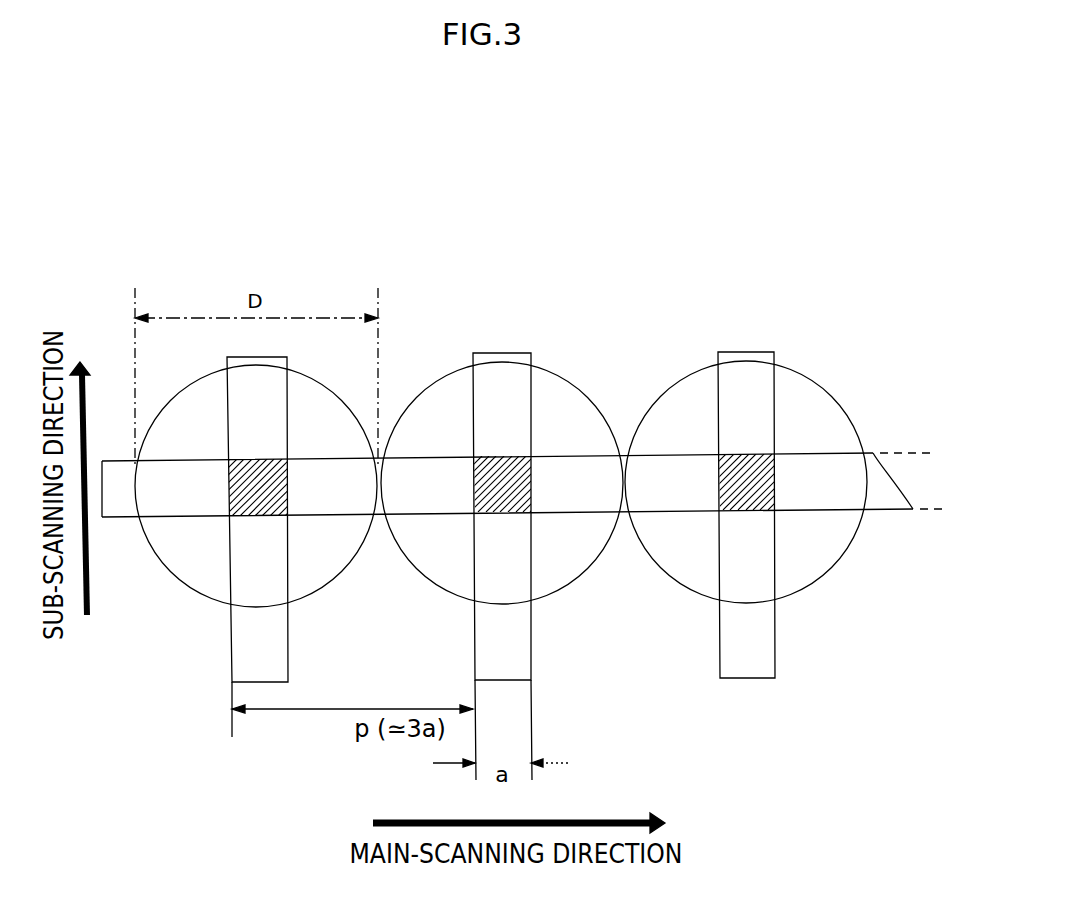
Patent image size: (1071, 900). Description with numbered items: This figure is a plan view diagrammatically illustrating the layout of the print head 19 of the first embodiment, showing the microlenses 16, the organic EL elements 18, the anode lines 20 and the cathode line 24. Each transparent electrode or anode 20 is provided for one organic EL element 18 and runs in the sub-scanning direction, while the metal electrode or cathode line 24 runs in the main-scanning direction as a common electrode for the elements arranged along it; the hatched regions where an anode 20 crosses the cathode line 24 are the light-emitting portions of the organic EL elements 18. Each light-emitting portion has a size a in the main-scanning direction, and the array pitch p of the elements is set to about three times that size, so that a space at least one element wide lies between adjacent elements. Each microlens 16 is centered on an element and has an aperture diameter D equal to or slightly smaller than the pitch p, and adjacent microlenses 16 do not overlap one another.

The microlens 16 is at (598, 558).
The organic EL element 18 is at (257, 507).
The print head 19 is at (523, 461).
The transparent electrode (anode) 20 is at (542, 525).
The metal electrode (cathode) 24 is at (880, 470).